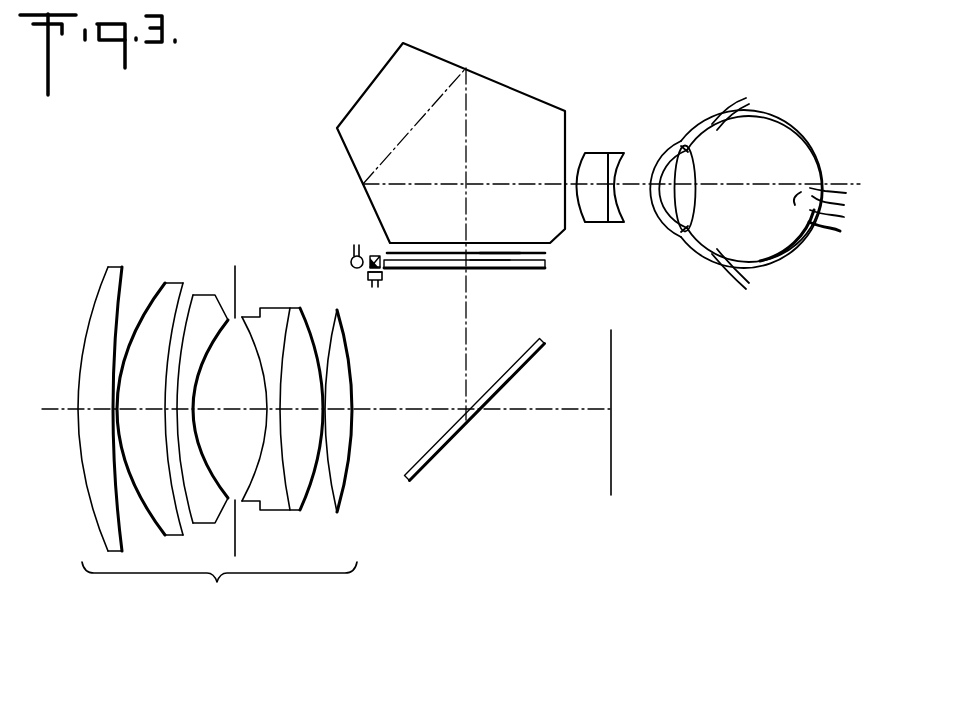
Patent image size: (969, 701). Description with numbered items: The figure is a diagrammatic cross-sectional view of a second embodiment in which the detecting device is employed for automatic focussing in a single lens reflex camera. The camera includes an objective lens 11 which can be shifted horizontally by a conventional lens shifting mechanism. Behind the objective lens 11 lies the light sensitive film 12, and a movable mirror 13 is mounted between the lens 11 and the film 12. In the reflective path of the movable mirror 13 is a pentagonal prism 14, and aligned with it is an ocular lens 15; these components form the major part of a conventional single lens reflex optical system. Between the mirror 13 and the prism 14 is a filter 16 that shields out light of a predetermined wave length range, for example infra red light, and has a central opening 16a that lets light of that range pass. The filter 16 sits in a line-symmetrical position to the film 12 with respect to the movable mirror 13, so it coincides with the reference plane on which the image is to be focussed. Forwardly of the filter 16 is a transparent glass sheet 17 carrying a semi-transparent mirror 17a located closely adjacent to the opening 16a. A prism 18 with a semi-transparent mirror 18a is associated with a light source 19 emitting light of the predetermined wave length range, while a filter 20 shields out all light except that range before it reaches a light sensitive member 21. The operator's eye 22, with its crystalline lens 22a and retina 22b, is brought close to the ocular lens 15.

The objective lens 11 is at (217, 582).
The light sensitive film 12 is at (611, 473).
The movable mirror 13 is at (462, 433).
The pentagonal prism 14 is at (363, 93).
The ocular lens 15 is at (588, 154).
The filter 16 is at (535, 252).
The central opening 16a is at (498, 257).
The transparent glass sheet 17 is at (530, 269).
The semi-transparent mirror 17a is at (480, 259).
The prism 18 is at (374, 257).
The semi-transparent mirror 18a is at (380, 270).
The light source 19 is at (351, 262).
The filter 20 is at (368, 272).
The light sensitive member 21 is at (371, 286).
The operator's eye 22 is at (770, 238).
The crystalline lens 22a is at (689, 172).
The retina 22b is at (800, 194).